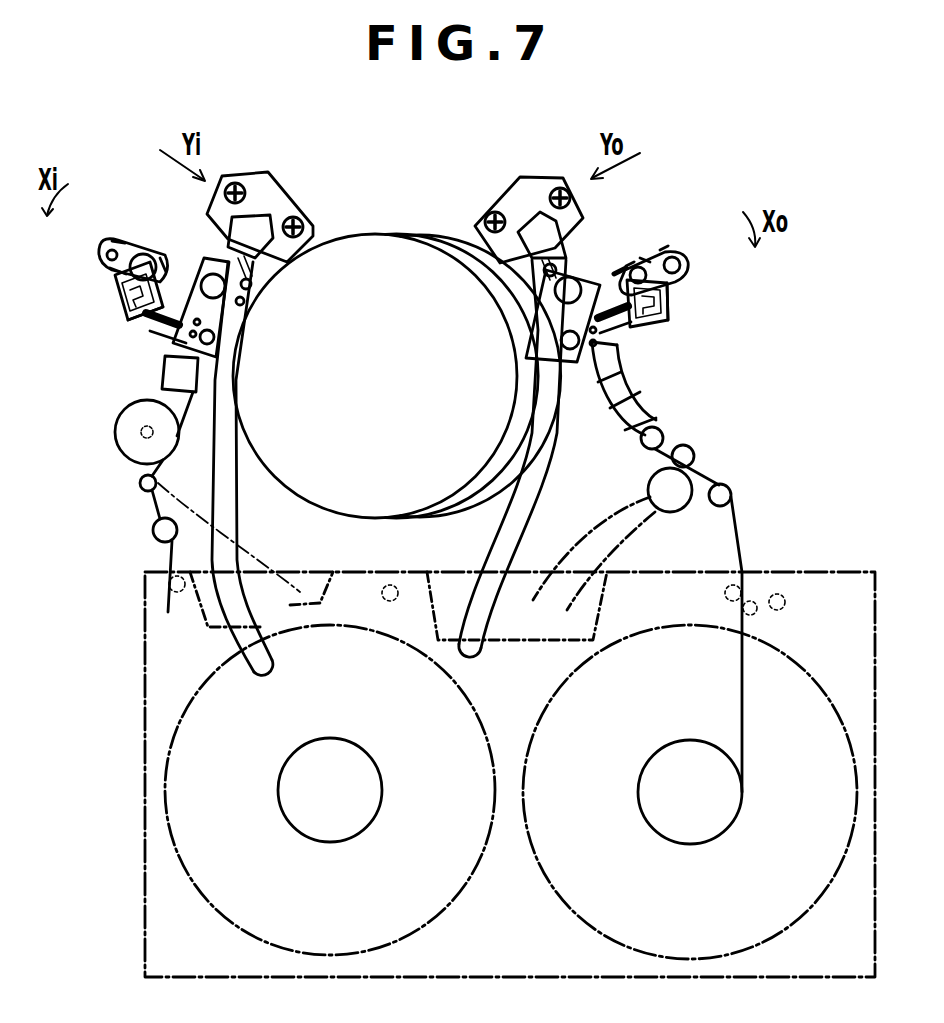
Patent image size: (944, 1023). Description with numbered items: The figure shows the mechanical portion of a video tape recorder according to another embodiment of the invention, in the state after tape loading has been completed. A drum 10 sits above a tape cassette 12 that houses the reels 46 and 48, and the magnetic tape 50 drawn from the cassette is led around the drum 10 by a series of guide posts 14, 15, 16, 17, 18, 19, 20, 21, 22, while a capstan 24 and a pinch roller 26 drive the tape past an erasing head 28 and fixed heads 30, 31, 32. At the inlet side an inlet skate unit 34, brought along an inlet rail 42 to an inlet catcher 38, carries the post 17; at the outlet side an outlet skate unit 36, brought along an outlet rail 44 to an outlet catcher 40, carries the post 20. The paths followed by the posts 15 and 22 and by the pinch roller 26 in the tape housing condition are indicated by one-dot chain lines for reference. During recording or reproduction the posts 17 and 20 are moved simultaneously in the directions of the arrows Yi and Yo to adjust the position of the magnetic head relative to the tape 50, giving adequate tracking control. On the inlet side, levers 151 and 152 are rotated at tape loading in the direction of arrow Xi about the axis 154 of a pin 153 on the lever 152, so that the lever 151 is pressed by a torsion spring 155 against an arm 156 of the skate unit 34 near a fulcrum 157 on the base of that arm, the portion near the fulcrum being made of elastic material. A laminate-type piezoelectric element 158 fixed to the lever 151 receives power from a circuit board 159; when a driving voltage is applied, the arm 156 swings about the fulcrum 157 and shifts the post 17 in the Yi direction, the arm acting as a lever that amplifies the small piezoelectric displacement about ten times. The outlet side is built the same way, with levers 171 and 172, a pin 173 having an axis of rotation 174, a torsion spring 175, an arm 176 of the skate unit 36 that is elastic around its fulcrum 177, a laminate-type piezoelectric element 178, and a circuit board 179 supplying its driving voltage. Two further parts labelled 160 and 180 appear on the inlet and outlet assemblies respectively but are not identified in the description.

The drum 10 is at (375, 350).
The tape cassette 12 is at (485, 774).
The guide post 14 is at (148, 535).
The guide post 15 is at (128, 488).
The guide post 16 is at (132, 432).
The guide post 17 is at (274, 288).
The guide post 18 is at (265, 318).
The guide post 19 is at (481, 376).
The guide post 20 is at (573, 295).
The guide post 21 is at (685, 448).
The guide post 22 is at (743, 495).
The capstan 24 is at (708, 462).
The pinch roller 26 is at (612, 539).
The erasing head 28 is at (150, 384).
The fixed head 30 is at (631, 388).
The fixed head 31 is at (647, 385).
The fixed head 32 is at (674, 405).
The inlet skate unit 34 is at (223, 320).
The outlet skate unit 36 is at (543, 331).
The inlet catcher 38 is at (260, 208).
The outlet catcher 40 is at (529, 224).
The inlet rail 42 is at (242, 468).
The outlet rail 44 is at (512, 458).
The reel 46 is at (330, 795).
The reel 48 is at (690, 798).
The magnetic tape 50 is at (757, 644).
The lever 151 is at (112, 329).
The lever 152 is at (124, 218).
The pin 153 is at (114, 251).
The axis 154 is at (151, 235).
The torsion spring 155 is at (94, 275).
The arm 156 is at (203, 269).
The fulcrum 157 is at (148, 358).
The laminate-type piezoelectric element 158 is at (144, 336).
The circuit board 159 is at (112, 292).
The holder end 160 is at (181, 240).
The lever 171 is at (651, 334).
The lever 172 is at (677, 264).
The pin 173 is at (683, 275).
The axis of rotation 174 is at (696, 229).
The torsion spring 175 is at (700, 301).
The arm 176 is at (617, 246).
The fulcrum 177 is at (462, 376).
The laminate-type piezoelectric element 178 is at (645, 235).
The circuit board 179 is at (679, 312).
The holder 180 is at (668, 224).